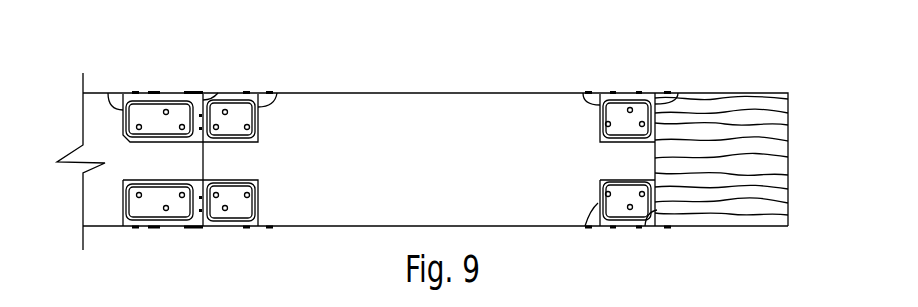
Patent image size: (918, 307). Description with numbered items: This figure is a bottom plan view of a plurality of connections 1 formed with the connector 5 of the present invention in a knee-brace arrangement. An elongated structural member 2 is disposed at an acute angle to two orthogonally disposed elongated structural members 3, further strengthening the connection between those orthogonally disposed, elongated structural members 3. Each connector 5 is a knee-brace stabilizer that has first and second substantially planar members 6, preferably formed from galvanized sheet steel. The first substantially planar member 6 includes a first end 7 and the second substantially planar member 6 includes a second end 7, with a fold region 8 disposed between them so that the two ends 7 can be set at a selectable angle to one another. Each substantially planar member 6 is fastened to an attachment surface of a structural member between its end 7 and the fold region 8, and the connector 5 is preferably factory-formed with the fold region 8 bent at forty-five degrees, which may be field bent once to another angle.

The structural connection 1 is at (170, 83).
The elongated structural member 2 is at (358, 231).
The orthogonally disposed elongated structural member 3 is at (98, 231).
The connector 5 is at (262, 176).
The substantially planar member 6 is at (157, 90).
The end 7 is at (108, 93).
The fold region 8 is at (218, 93).